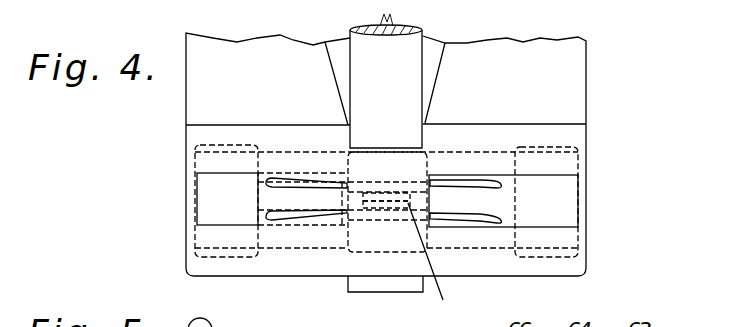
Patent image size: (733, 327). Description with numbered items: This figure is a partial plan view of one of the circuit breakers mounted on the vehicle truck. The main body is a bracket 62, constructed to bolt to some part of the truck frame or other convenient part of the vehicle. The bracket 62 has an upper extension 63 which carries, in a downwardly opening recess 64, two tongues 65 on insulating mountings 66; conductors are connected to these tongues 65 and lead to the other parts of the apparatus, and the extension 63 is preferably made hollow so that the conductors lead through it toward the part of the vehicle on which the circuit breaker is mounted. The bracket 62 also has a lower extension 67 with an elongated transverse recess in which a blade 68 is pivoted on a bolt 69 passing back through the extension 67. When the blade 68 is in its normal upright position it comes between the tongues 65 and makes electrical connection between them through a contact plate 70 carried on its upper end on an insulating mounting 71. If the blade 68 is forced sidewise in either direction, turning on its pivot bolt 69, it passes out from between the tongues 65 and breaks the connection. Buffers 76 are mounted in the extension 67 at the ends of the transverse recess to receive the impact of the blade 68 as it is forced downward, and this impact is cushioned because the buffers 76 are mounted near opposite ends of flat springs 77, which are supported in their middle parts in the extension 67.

The bracket 62 is at (575, 73).
The upper extension 63 is at (355, 157).
The downwardly opening recess 64 is at (372, 173).
The tongues 65 is at (282, 183).
The insulating mountings 66 is at (385, 180).
The lower extension 67 is at (585, 156).
The blade 68 is at (438, 261).
The bolt 69 is at (360, 284).
The contact plate 70 is at (402, 188).
The insulating mounting 71 is at (402, 194).
The buffers 76 is at (217, 203).
The flat springs 77 is at (496, 152).